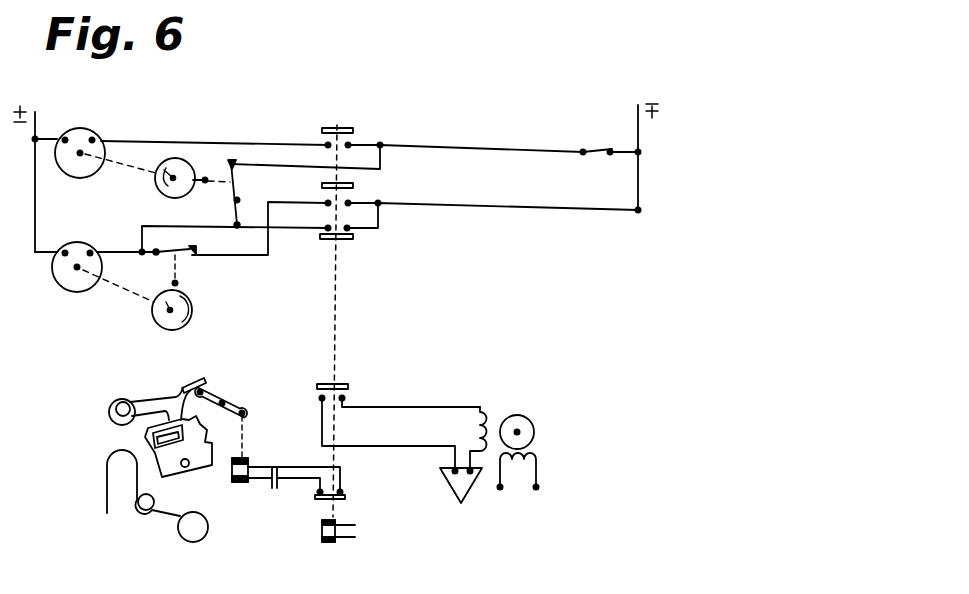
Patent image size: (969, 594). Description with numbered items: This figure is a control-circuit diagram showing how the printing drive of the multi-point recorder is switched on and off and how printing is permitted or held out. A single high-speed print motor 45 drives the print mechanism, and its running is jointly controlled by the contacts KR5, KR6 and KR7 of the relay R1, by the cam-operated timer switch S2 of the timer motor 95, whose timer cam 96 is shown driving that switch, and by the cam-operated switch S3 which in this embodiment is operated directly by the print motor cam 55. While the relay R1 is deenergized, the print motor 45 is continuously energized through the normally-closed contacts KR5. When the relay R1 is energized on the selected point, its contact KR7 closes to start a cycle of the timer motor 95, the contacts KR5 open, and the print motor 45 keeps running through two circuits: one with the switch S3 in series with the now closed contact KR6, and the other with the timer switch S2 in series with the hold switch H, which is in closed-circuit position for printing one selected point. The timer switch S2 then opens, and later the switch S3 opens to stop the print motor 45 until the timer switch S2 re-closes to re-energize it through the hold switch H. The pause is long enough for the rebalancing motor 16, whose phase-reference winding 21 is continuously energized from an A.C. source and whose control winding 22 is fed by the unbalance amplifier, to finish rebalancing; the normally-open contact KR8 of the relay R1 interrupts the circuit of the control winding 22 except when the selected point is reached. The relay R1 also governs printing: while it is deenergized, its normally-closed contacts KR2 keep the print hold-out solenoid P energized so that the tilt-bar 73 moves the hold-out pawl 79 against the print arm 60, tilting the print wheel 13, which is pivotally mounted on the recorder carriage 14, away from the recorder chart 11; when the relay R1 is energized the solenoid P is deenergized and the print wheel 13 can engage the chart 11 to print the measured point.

The timer motor 95 is at (80, 129).
The lamp 96 is at (155, 183).
The print motor 45 is at (52, 270).
The print motor cam 55 is at (186, 302).
The timer switch S2 is at (239, 186).
The cam-operated switch S3 is at (182, 251).
The relay contact KR7 is at (357, 138).
The relay contact KR6 is at (356, 201).
The normally-closed relay contacts KR5 is at (355, 233).
The hold switch H is at (589, 151).
The normally-open relay contact KR8 is at (360, 385).
The control winding 22 is at (482, 408).
The rebalancing motor 16 is at (554, 414).
The phase-reference winding 21 is at (542, 457).
The normally-closed relay contacts KR2 is at (316, 484).
The relay R1 is at (320, 531).
The print hold-out solenoid P is at (237, 484).
The print wheel 13 is at (110, 405).
The print arm 60 is at (141, 400).
The hold-out pawl 79 is at (190, 382).
The tilt-bar 73 is at (204, 390).
The recorder carriage 14 is at (178, 468).
The recorder chart 11 is at (107, 488).